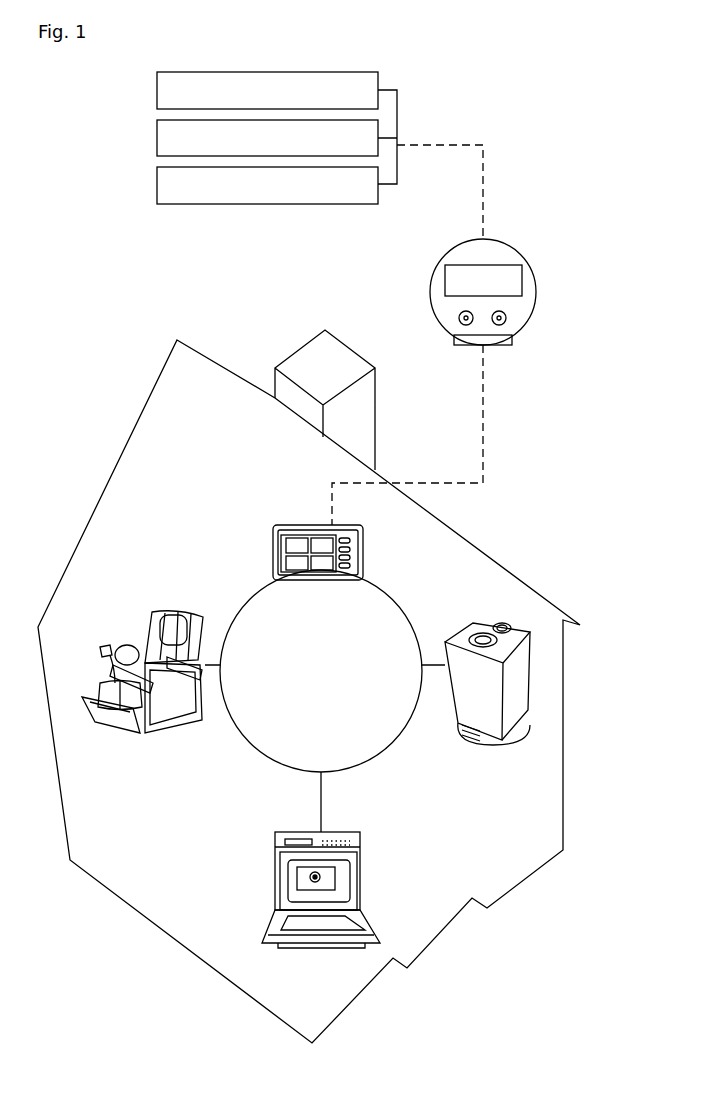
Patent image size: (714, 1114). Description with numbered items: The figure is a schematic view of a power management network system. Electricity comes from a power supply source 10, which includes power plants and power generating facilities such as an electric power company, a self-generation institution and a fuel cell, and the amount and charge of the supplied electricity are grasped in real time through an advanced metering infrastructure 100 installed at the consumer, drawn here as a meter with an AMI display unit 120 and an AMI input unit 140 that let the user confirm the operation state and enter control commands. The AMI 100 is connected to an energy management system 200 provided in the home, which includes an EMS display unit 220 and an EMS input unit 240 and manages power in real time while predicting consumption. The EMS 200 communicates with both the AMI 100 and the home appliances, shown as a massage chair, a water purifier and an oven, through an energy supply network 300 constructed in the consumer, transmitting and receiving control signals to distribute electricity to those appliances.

The power supply source 10 is at (147, 72).
The advanced metering infrastructure (AMI) 100 is at (466, 365).
The AMI display unit 120 is at (455, 280).
The AMI input unit 140 is at (506, 318).
The energy management system (EMS) 200 is at (324, 517).
The EMS display unit 220 is at (322, 545).
The EMS input unit 240 is at (350, 550).
The energy supply network 300 is at (425, 608).